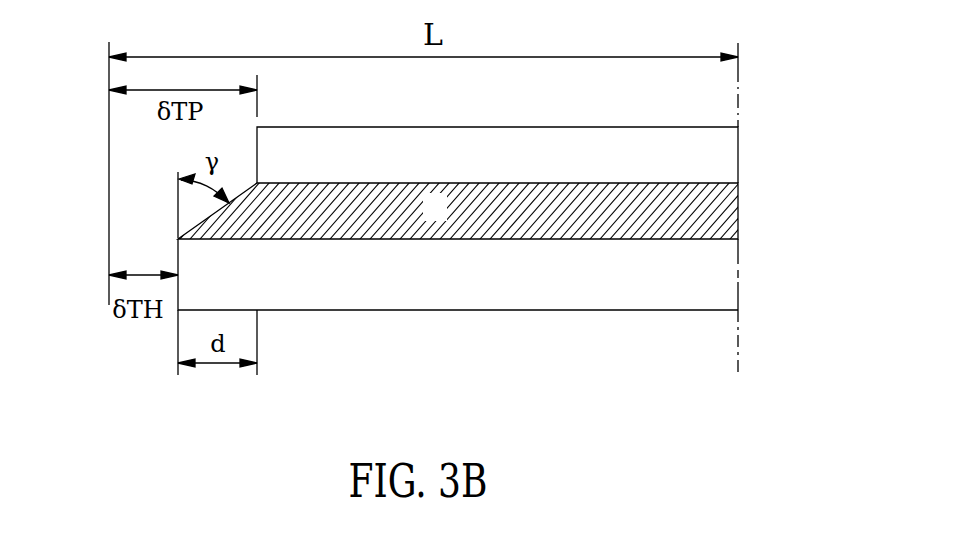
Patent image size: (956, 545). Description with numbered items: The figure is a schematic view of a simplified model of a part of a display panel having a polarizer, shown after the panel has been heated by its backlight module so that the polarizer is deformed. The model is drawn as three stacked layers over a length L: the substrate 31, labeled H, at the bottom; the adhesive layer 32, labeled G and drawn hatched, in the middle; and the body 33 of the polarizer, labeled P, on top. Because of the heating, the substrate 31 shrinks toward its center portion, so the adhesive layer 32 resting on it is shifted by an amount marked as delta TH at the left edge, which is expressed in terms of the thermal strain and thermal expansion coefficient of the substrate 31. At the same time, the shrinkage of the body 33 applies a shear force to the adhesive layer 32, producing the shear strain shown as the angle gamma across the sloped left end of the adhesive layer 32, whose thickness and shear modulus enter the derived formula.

The substrate 31 is at (738, 277).
The adhesive layer 32 is at (738, 210).
The body of the polarizer 33 is at (738, 157).